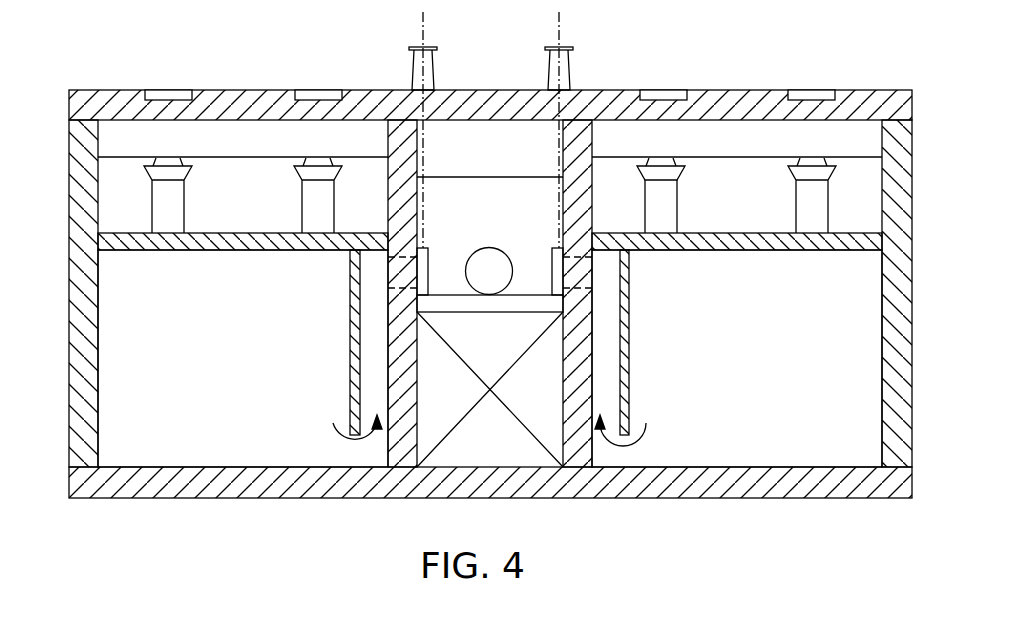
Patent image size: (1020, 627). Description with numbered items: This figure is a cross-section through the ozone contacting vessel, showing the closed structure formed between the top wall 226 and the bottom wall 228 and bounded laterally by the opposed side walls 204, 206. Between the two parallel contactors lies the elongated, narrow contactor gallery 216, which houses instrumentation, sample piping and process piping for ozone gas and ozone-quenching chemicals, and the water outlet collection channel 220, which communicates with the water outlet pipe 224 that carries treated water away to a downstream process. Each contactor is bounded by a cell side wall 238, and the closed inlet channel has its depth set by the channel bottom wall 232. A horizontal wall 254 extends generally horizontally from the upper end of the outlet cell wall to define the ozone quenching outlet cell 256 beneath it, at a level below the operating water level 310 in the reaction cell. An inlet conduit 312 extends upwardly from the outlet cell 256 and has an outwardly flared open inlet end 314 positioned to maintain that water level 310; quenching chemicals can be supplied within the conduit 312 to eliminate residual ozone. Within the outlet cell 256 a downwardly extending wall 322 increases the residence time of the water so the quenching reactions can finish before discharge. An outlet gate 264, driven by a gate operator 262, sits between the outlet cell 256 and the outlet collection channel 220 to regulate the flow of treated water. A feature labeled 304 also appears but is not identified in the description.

The side wall 204 is at (90, 365).
The side wall 206 is at (885, 367).
The contactor gallery 216 is at (477, 460).
The water outlet collection channel 220 is at (492, 130).
The water outlet pipe 224 is at (510, 258).
The top wall 226 is at (713, 100).
The bottom wall 228 is at (662, 495).
The channel bottom wall 232 is at (350, 388).
The cell side wall 238 is at (393, 353).
The horizontal wall 254 is at (236, 240).
The ozone quenching outlet cell 256 is at (225, 458).
The gate operator 262 is at (409, 62).
The outlet gate 264 is at (432, 257).
The slot 304 is at (817, 90).
The operating water level 310 is at (768, 160).
The inlet conduit 312 is at (300, 213).
The outwardly flared open inlet end 314 is at (790, 178).
The downwardly extending wall 322 is at (632, 388).